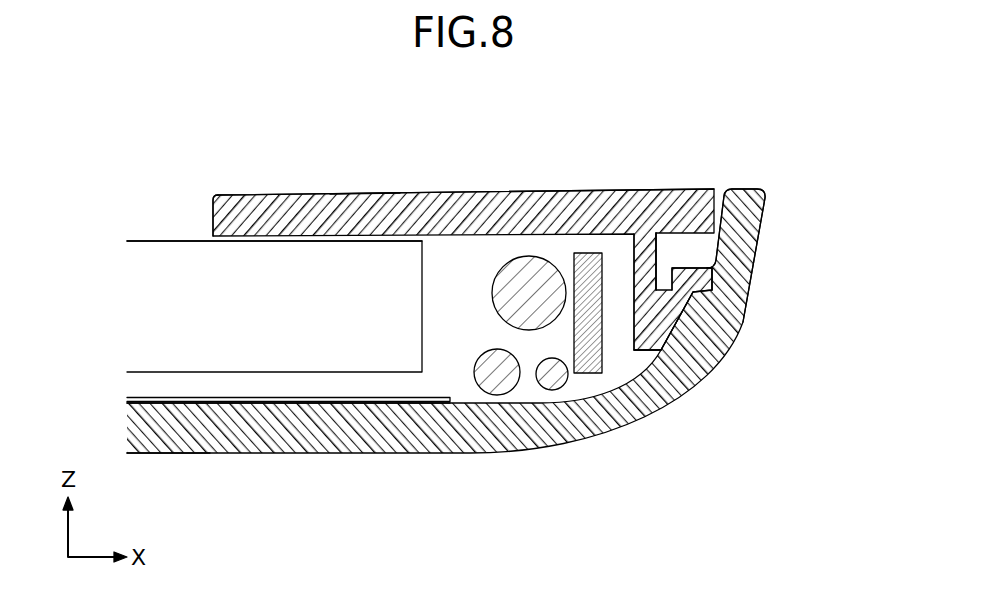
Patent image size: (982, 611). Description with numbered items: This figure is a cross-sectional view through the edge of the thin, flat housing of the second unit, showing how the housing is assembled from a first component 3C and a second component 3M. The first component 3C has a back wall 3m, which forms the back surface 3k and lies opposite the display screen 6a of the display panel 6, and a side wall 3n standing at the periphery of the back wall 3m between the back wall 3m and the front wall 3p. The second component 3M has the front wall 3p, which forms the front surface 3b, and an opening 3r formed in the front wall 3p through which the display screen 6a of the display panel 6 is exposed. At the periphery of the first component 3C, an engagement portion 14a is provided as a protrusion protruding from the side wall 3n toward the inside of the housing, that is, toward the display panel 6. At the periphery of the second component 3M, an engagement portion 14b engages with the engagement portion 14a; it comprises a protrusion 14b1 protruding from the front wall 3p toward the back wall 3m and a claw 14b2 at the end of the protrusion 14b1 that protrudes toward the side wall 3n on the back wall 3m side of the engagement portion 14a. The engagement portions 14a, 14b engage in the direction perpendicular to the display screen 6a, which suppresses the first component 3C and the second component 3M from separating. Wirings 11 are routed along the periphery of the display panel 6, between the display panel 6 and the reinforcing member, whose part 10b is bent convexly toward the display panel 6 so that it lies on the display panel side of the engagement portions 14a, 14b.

The first component 3C is at (269, 455).
The side wall 3n is at (738, 307).
The back surface 3k is at (165, 453).
The back wall 3m is at (222, 443).
The display panel 6 is at (323, 374).
The display screen 6a is at (162, 241).
The second component 3M is at (264, 189).
The opening 3r is at (213, 217).
The front surface 3b is at (302, 195).
The front wall 3p is at (358, 213).
The engagement portion 14b is at (630, 271).
The protrusion 14b1 is at (653, 260).
The claw 14b2 is at (650, 327).
The engagement portion 14a is at (693, 283).
The wirings 11 is at (530, 265).
The part 10b is at (590, 257).